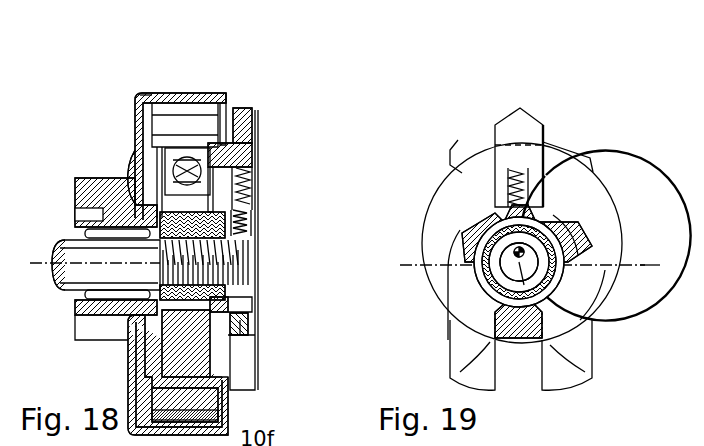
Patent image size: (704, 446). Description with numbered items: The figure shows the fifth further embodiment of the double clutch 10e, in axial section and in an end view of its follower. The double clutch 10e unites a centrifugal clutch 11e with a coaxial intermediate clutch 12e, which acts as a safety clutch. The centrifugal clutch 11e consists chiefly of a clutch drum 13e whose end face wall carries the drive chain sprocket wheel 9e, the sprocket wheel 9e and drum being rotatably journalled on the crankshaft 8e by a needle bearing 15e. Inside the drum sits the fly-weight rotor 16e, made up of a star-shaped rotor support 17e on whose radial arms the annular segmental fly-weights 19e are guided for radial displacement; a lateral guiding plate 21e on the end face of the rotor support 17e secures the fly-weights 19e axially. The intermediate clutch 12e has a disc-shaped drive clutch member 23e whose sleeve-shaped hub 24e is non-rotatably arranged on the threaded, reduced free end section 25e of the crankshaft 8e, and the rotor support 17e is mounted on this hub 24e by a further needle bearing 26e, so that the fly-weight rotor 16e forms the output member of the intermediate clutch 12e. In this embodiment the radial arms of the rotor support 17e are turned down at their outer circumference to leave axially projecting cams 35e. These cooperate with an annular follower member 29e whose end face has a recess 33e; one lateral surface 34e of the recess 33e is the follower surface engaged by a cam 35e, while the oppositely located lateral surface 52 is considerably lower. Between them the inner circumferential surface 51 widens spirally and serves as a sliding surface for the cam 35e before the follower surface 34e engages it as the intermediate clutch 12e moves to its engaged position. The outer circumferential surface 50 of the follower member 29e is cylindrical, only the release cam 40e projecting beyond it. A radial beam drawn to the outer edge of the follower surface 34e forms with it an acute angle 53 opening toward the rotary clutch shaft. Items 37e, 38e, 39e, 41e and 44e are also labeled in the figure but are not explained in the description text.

In FIG. 18, the crankshaft 8e is at (63, 235).
In FIG. 18, the drive chain sprocket wheel 9e is at (80, 180).
In FIG. 18, the double clutch 10e is at (187, 84).
In FIG. 18, the centrifugal clutch 11e is at (122, 89).
In FIG. 18, the intermediate clutch 12e is at (240, 87).
In FIG. 18, the clutch drum 13e is at (140, 95).
In FIG. 18, the needle bearing 15e is at (130, 228).
In FIG. 18, the fly-weight rotor 16e is at (133, 141).
In FIG. 18, the rotor support 17e is at (175, 358).
In FIG. 19, the rotor support 17e is at (478, 273).
In FIG. 18, the fly-weights 19e is at (160, 122).
In FIG. 18, the lateral guiding plate 21e is at (160, 168).
In FIG. 18, the drive clutch member 23e is at (253, 298).
In FIG. 18, the sleeve-shaped hub 24e is at (183, 233).
In FIG. 19, the sleeve-shaped hub 24e is at (505, 250).
In FIG. 18, the free end section of crankshaft 25e is at (223, 260).
In FIG. 18, the needle bearing 26e is at (225, 222).
In FIG. 19, the needle bearing 26e is at (468, 265).
In FIG. 18, the annular follower member 29e is at (253, 155).
In FIG. 19, the annular follower member 29e is at (616, 241).
In FIG. 18, the recess 33e is at (237, 333).
In FIG. 19, the recess 33e is at (505, 342).
In FIG. 19, the follower surface 34e is at (580, 345).
In FIG. 18, the axially projecting cams 35e is at (248, 317).
In FIG. 19, the axially projecting cams 35e is at (585, 237).
In FIG. 19, the bore 37e is at (445, 262).
In FIG. 18, the spring 38e is at (250, 186).
In FIG. 19, the spring 38e is at (525, 188).
In FIG. 19, the ring 39e is at (585, 210).
In FIG. 18, the release cam 40e is at (252, 118).
In FIG. 19, the release cam 40e is at (495, 125).
In FIG. 19, the direction of movement 41e is at (540, 92).
In FIG. 19, the axis 44e is at (648, 272).
In FIG. 19, the outer circumferential surface 50 is at (610, 182).
In FIG. 19, the inner circumferential surface 51 is at (478, 182).
In FIG. 19, the oppositely located lateral surface 52 is at (500, 347).
In FIG. 19, the acute angle 53 is at (600, 300).